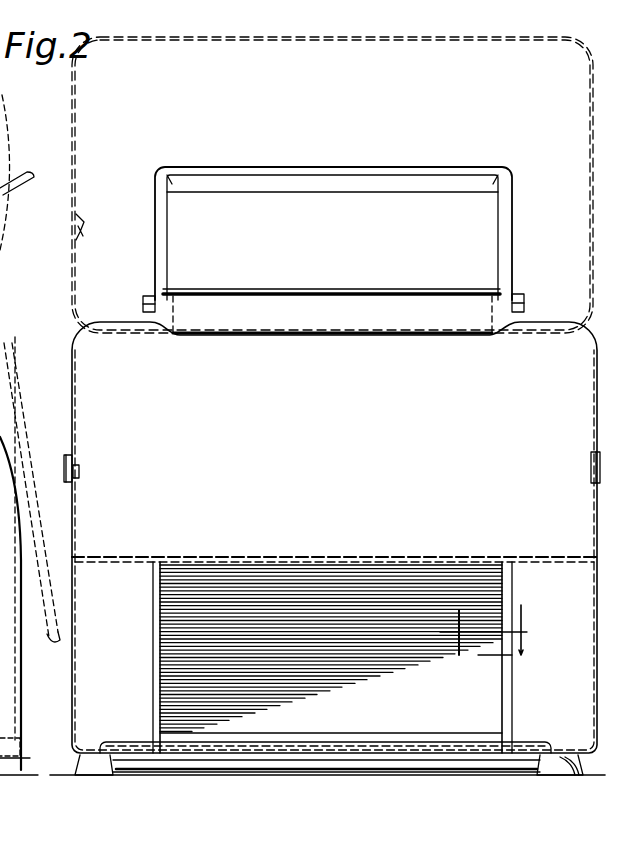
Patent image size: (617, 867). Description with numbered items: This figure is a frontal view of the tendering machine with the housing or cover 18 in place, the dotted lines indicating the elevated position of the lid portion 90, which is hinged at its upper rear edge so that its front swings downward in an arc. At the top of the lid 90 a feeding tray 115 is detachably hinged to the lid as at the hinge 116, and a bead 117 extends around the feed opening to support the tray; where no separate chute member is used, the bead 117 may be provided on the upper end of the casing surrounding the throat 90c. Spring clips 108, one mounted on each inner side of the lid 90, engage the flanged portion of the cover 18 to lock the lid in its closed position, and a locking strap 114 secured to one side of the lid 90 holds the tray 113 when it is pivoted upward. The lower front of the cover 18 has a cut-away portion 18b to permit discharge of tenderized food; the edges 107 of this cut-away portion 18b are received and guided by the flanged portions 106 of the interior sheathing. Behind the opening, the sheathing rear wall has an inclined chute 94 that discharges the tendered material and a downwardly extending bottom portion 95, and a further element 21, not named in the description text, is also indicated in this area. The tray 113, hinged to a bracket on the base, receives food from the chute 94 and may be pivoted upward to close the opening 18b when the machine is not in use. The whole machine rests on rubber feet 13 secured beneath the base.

The lid portion 90 is at (275, 40).
The throat 90c is at (332, 314).
The feeding tray 115 is at (500, 200).
The bead 117 is at (437, 290).
The hinge 116 is at (146, 302).
The spring clip 108 is at (84, 224).
The locking strap 114 is at (70, 458).
The cut-away portion 18b is at (331, 649).
The edge of cut-away portion 107 is at (160, 683).
The flanged portion 106 is at (153, 711).
The pin 21 is at (532, 632).
The housing or cover 18 is at (521, 612).
The chute or inclined portion 94 is at (512, 657).
The bottom portion 95 is at (288, 742).
The rubber feet 13 is at (318, 771).
The tray 113 is at (454, 776).